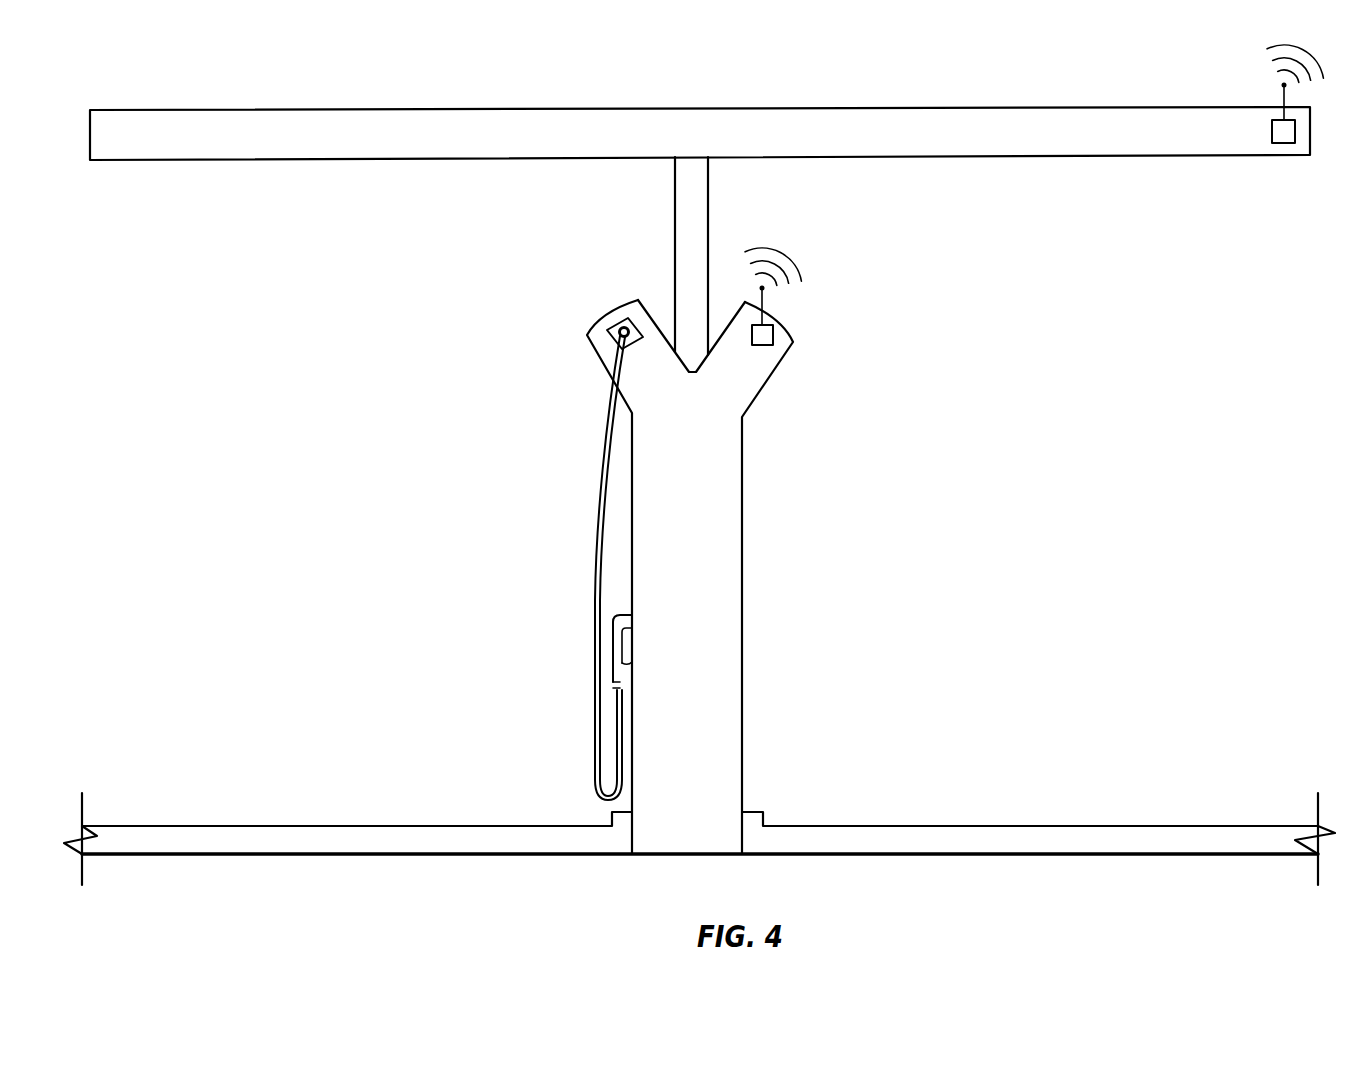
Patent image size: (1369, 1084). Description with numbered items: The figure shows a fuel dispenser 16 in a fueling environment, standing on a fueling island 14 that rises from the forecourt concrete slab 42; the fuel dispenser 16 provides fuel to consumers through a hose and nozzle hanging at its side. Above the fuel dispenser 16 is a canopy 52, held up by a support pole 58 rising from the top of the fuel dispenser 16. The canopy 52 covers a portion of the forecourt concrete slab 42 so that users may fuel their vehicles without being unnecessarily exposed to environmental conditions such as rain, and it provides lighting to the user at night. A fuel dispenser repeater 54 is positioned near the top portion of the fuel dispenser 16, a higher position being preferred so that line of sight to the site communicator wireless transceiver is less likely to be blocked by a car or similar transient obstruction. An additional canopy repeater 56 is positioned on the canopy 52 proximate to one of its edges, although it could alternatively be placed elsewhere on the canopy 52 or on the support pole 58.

The fueling island 14 is at (763, 812).
The fuel dispenser 16 is at (743, 583).
The forecourt concrete slab 42 is at (530, 826).
The canopy 52 is at (435, 118).
The fuel dispenser repeater 54 is at (773, 335).
The canopy repeater 56 is at (1295, 132).
The support pole 58 is at (708, 198).